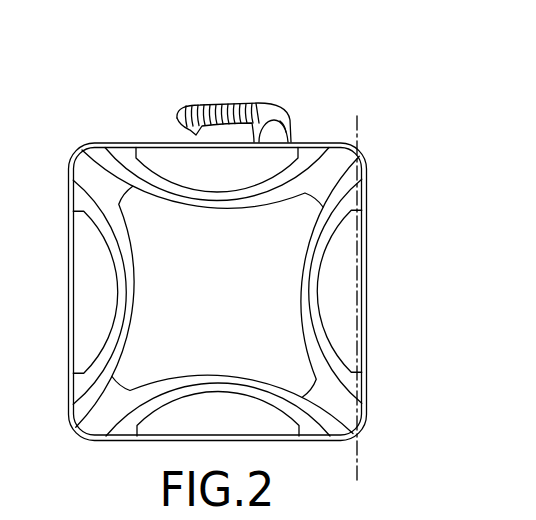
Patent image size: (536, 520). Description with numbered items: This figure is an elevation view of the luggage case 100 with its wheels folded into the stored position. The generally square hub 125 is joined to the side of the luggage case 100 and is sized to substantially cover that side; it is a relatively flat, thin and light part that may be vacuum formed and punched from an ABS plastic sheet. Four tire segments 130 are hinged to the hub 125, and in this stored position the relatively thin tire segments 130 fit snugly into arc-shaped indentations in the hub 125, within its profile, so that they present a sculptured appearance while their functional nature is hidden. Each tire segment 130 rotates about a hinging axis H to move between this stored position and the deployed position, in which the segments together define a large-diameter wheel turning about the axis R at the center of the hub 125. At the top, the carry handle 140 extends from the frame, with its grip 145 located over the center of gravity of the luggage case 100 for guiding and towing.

The luggage case 100 is at (317, 84).
The hub 125 is at (293, 252).
The tire segment 130 is at (105, 154).
The carry handle 140 is at (234, 106).
The grip 145 is at (204, 106).